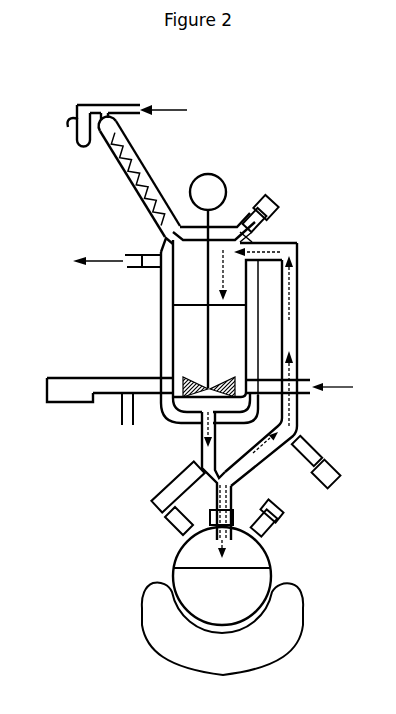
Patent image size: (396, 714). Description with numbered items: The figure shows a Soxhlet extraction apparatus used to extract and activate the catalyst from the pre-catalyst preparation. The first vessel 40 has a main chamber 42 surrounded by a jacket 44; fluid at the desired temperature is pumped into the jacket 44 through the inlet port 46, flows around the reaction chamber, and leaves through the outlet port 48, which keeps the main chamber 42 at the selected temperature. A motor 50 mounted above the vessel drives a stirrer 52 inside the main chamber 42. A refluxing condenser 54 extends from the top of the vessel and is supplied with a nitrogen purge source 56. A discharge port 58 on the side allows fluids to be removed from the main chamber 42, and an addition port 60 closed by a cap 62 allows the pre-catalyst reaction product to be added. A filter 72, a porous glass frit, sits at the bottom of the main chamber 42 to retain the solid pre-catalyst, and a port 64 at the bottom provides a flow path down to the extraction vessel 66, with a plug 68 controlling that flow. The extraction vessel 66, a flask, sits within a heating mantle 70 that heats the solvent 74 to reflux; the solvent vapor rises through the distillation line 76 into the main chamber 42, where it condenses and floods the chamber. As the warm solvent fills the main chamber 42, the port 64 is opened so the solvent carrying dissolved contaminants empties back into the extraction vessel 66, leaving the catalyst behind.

The first vessel 40 is at (123, 330).
The main chamber 42 is at (193, 293).
The jacket 44 is at (178, 350).
The inlet port 46 is at (327, 390).
The outlet port 48 is at (97, 262).
The motor 50 is at (205, 173).
The stirrer 52 is at (173, 378).
The refluxing condenser 54 is at (122, 175).
The nitrogen purge source 56 is at (168, 110).
The discharge port 58 is at (120, 413).
The addition port 60 is at (255, 242).
The cap 62 is at (262, 206).
The port 64 is at (200, 415).
The extraction vessel 66 is at (175, 553).
The plug 68 is at (155, 503).
The heating mantle 70 is at (143, 642).
The filter 72 is at (187, 427).
The solvent 74 is at (275, 583).
The distillation line 76 is at (300, 305).